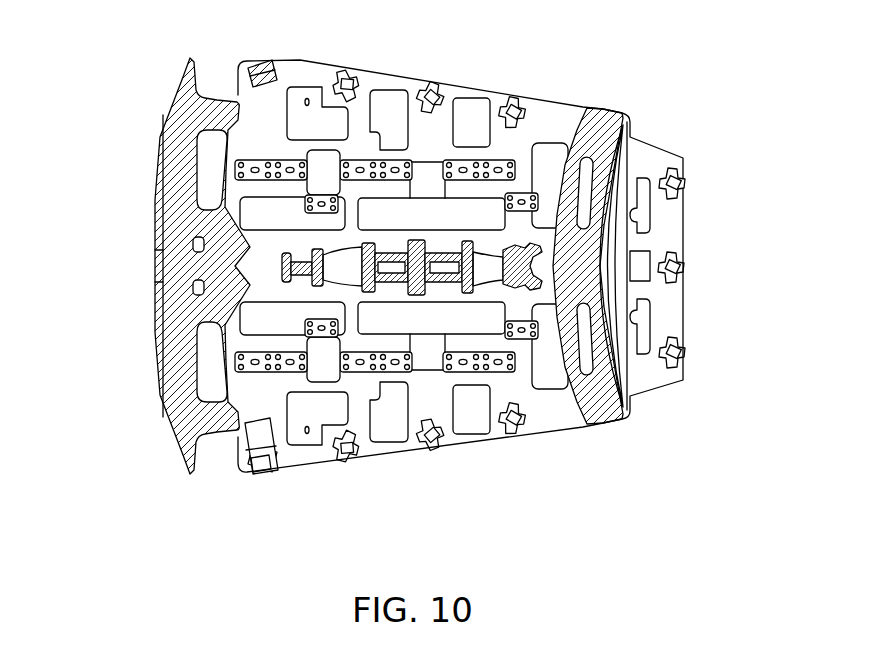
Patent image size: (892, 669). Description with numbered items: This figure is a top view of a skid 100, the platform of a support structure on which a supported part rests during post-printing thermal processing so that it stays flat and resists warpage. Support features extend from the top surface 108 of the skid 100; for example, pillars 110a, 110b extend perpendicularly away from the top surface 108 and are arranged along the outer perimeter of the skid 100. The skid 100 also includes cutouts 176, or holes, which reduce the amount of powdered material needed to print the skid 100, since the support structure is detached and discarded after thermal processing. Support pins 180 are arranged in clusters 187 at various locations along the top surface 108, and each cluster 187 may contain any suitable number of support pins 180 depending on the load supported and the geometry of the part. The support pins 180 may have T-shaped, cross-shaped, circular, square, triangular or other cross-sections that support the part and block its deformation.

The skid 100 is at (172, 82).
The top surface 108 is at (298, 70).
The pillar 110a is at (682, 187).
The pillar 110b is at (512, 104).
The cutout 176 is at (473, 434).
The support pin 180 is at (287, 372).
The cluster 187 is at (542, 363).